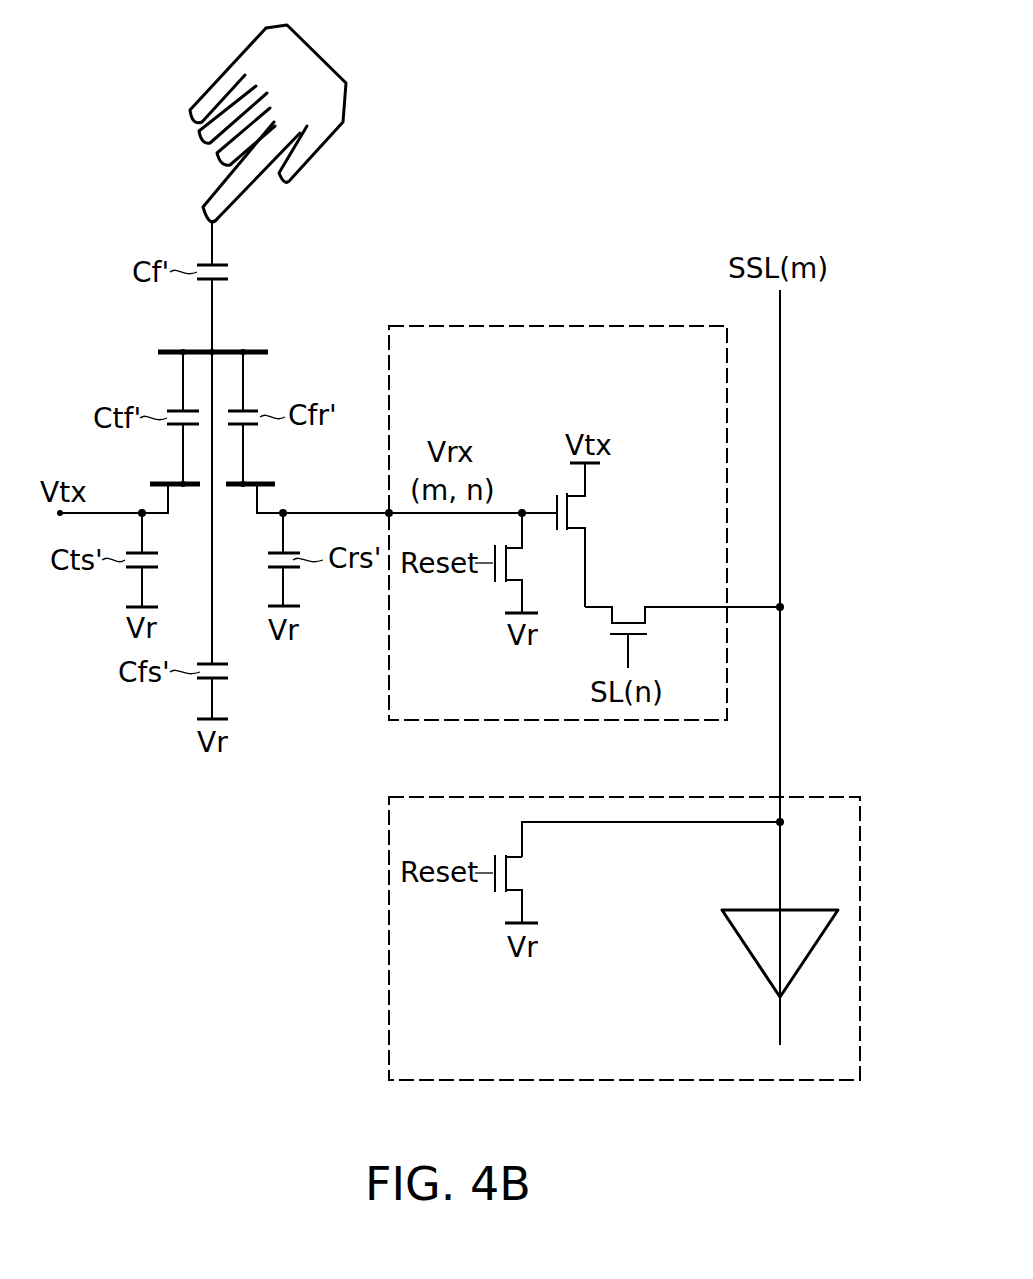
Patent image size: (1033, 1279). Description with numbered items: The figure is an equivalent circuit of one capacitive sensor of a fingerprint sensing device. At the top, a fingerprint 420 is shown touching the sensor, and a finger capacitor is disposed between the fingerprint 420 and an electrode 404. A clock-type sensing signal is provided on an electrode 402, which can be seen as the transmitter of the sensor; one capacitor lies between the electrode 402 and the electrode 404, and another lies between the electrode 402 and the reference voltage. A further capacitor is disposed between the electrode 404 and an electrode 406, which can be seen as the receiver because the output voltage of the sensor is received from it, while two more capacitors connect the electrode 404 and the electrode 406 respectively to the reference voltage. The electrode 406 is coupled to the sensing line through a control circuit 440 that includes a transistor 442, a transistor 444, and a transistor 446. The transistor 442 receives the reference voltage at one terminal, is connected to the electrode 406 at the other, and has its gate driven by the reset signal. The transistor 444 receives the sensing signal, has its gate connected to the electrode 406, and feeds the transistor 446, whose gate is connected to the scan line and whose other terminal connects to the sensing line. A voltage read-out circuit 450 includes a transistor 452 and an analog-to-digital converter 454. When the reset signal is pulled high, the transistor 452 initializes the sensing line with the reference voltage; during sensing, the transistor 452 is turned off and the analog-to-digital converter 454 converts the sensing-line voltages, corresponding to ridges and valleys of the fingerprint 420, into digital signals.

The fingerprint 420 is at (210, 218).
The electrode 404 is at (168, 352).
The electrode 402 is at (158, 482).
The electrode 406 is at (265, 482).
The control circuit 440 is at (392, 326).
The transistor 442 is at (488, 577).
The transistor 444 is at (580, 512).
The transistor 446 is at (628, 613).
The voltage read-out circuit 450 is at (391, 797).
The transistor 452 is at (517, 873).
The analog-to-digital converter 454 is at (750, 955).